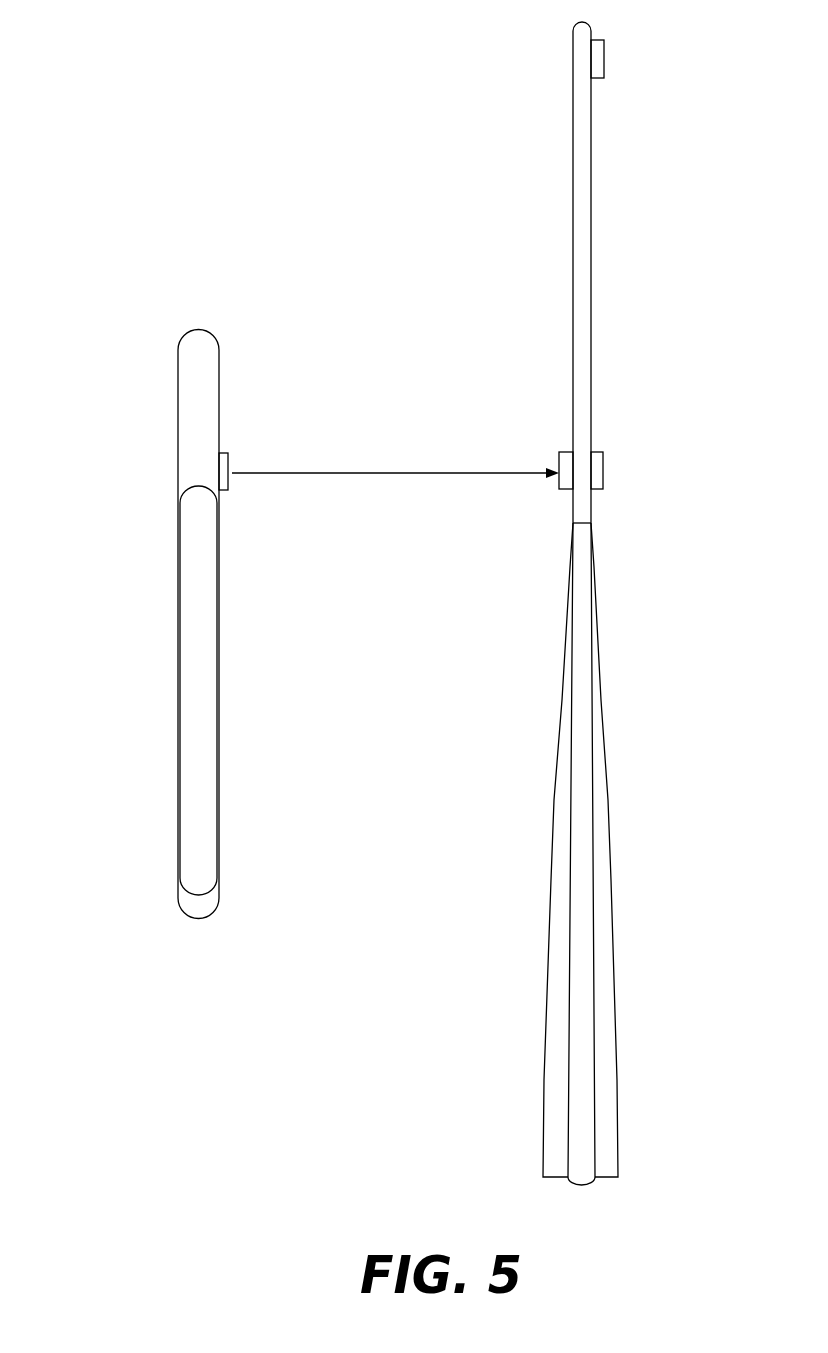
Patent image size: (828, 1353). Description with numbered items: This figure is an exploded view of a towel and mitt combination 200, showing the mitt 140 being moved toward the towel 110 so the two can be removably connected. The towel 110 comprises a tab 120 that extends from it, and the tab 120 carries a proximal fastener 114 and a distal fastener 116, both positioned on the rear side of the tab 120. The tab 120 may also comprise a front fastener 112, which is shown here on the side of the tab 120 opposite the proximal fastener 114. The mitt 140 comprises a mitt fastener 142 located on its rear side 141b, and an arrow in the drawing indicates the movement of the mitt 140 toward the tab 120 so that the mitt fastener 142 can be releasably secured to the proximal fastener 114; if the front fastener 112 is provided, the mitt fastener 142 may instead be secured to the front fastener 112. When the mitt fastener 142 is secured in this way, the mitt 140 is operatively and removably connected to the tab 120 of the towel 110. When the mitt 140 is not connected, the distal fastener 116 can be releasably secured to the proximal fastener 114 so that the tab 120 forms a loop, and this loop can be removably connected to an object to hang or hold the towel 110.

The towel and mitt combination 200 is at (403, 32).
The towel 110 is at (548, 764).
The front fastener 112 is at (559, 458).
The proximal fastener 114 is at (604, 458).
The distal fastener 116 is at (604, 60).
The tab 120 is at (573, 130).
The mitt 140 is at (172, 352).
The rear side of the mitt 141b is at (219, 823).
The mitt fastener 142 is at (228, 487).